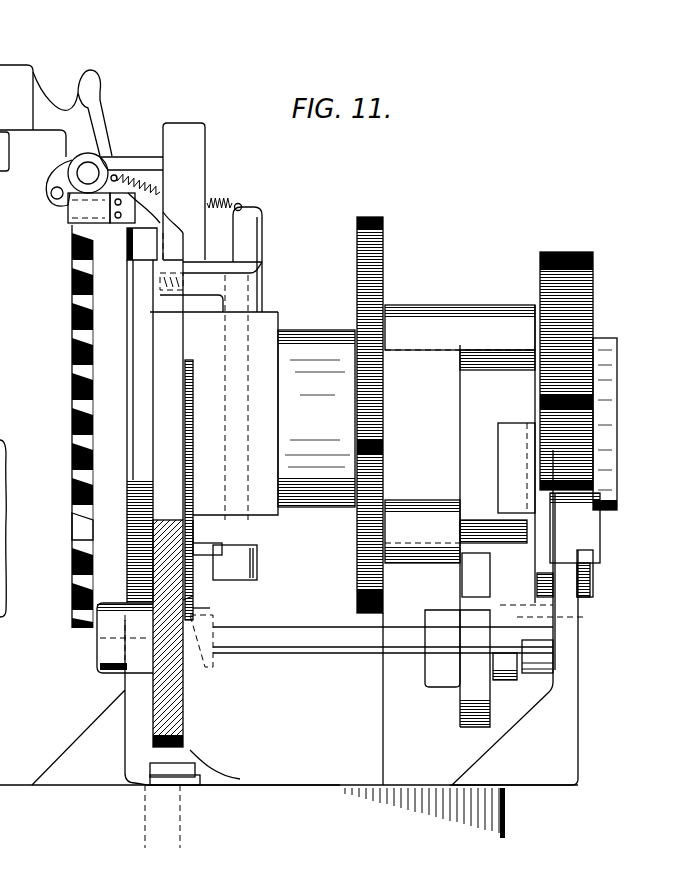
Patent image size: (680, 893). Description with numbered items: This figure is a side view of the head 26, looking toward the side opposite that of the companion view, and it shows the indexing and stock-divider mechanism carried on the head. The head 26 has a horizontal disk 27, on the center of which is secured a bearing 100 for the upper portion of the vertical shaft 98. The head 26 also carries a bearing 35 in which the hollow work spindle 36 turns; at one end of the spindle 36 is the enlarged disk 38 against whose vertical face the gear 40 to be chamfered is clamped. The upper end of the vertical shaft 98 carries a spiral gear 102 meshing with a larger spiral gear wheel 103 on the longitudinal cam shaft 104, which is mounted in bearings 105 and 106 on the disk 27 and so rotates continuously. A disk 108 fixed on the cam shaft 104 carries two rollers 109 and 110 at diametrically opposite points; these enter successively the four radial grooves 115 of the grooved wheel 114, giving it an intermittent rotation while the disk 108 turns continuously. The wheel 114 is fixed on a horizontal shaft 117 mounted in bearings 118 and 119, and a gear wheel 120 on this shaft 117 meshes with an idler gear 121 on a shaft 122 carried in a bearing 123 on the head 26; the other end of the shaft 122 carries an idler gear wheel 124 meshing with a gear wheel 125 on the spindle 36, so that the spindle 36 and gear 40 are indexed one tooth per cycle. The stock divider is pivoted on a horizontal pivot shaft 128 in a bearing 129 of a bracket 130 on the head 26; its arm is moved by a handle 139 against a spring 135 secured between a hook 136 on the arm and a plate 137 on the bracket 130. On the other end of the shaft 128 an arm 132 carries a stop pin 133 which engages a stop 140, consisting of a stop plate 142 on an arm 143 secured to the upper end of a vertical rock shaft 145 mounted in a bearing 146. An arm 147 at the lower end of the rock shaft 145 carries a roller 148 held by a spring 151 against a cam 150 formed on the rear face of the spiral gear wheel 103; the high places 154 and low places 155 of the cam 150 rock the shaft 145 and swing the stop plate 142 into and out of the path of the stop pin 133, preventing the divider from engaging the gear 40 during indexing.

The handle 139 is at (101, 82).
The bearing 129 is at (113, 150).
The pivot shaft 128 is at (82, 170).
The arm 132 is at (50, 180).
The stop pin 133 is at (53, 201).
The hook 136 is at (118, 172).
The stop 140 is at (68, 208).
The stop plate 142 is at (72, 220).
The bracket 130 is at (206, 134).
The spring 135 is at (217, 197).
The plate 137 is at (251, 221).
The arm 143 is at (213, 268).
The spring 151 is at (264, 262).
The work spindle 36 is at (190, 362).
The bearing 146 is at (280, 318).
The rock shaft 145 is at (241, 334).
The bearing 35 is at (333, 340).
The idler gear 121 is at (357, 263).
The bearing 123 is at (455, 305).
The shaft 122 is at (537, 304).
The idler gear wheel 124 is at (595, 284).
The gear wheel 125 is at (579, 421).
The grooved wheel 114 is at (498, 456).
The bearing 118 is at (451, 503).
The radial grooves 115 is at (498, 517).
The shaft 117 is at (472, 520).
The bearing 119 is at (600, 563).
The roller 109 is at (580, 605).
The bearing 106 is at (581, 701).
The cam shaft 104 is at (313, 653).
The disk 108 is at (464, 584).
The roller 110 is at (501, 681).
The roller 148 is at (200, 545).
The arm 147 is at (223, 563).
The low places 155 is at (193, 596).
The high places 154 is at (210, 608).
The spiral gear 102 is at (211, 665).
The cam 150 is at (183, 722).
The bearing 105 is at (116, 675).
The spiral gear wheel 103 is at (130, 730).
The head 26 is at (14, 787).
The bearing 100 is at (243, 775).
The vertical shaft 98 is at (231, 764).
The disk 27 is at (506, 813).
The gear 40 is at (85, 392).
The disk 38 is at (100, 463).
The gear wheel 120 is at (357, 595).